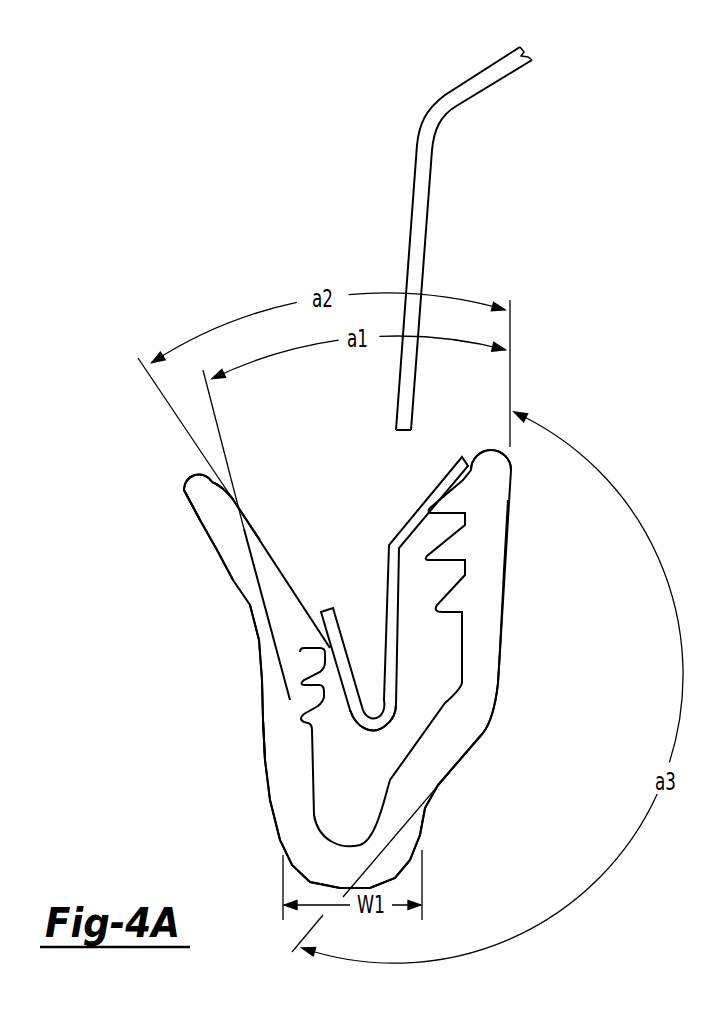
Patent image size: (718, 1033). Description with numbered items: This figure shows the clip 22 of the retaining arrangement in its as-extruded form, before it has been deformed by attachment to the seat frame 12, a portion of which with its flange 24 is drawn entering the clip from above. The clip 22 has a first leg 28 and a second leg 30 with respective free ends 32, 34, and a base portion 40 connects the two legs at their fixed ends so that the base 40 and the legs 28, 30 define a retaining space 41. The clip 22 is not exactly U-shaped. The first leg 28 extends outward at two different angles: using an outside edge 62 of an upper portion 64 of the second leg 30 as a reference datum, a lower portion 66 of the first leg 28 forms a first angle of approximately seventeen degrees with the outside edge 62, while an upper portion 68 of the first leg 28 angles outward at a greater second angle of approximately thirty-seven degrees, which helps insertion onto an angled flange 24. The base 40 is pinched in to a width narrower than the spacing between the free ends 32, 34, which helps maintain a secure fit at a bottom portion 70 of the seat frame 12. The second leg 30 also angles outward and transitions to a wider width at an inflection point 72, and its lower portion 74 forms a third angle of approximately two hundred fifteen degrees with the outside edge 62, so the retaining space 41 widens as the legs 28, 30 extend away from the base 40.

The seat frame 12 is at (490, 86).
The clip 22 is at (250, 606).
The flange 24 is at (347, 657).
The first leg 28 is at (262, 718).
The second leg 30 is at (512, 591).
The free end 32 is at (190, 472).
The free end 34 is at (490, 451).
The base portion 40 is at (300, 884).
The retaining space 41 is at (357, 523).
The outside edge 62 is at (499, 680).
The upper portion 64 is at (512, 522).
The lower portion 66 is at (266, 775).
The upper portion 68 is at (193, 530).
The bottom portion 70 is at (368, 732).
The inflection point 72 is at (438, 785).
The lower portion 74 is at (483, 733).